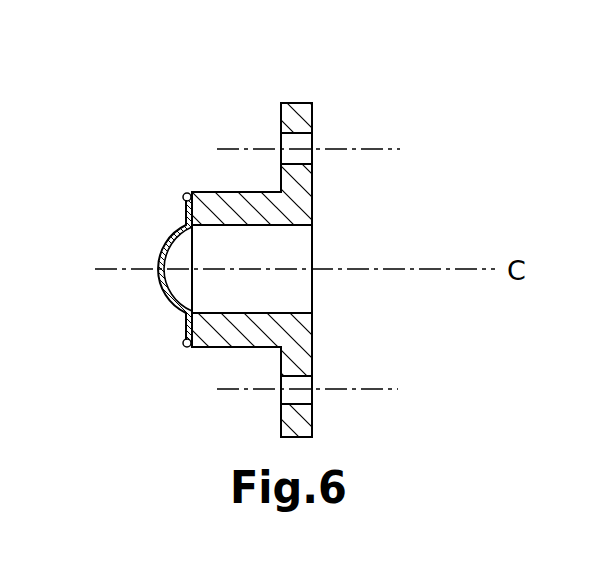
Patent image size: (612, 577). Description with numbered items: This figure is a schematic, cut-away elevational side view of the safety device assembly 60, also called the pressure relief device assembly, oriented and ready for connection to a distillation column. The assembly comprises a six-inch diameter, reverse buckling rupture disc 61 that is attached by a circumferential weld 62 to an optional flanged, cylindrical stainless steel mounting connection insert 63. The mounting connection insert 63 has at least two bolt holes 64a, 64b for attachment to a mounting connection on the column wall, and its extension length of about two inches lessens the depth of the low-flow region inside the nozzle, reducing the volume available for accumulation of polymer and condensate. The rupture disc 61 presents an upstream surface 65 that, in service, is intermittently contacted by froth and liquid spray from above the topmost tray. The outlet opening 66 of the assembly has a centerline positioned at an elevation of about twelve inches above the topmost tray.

The safety device assembly 60 is at (227, 113).
The rupture disk 61 is at (158, 248).
The circumferential weld 62 is at (188, 193).
The mounting connection insert 63 is at (287, 323).
The bolt hole 64a is at (297, 142).
The bolt hole 64b is at (300, 397).
The upstream surface 65 is at (158, 296).
The outlet opening 66 is at (265, 250).